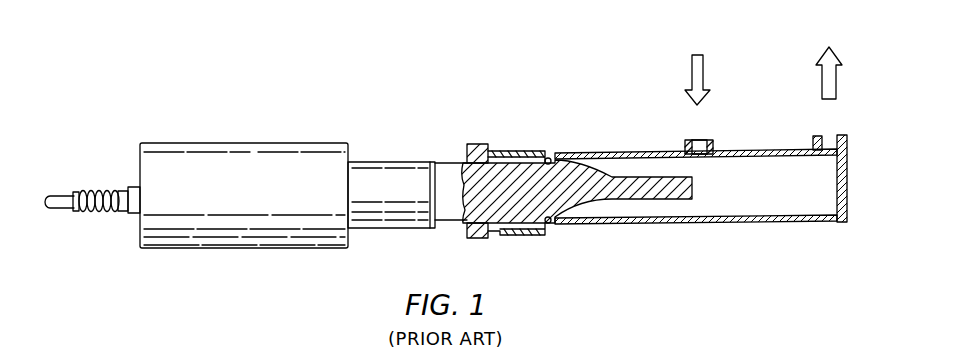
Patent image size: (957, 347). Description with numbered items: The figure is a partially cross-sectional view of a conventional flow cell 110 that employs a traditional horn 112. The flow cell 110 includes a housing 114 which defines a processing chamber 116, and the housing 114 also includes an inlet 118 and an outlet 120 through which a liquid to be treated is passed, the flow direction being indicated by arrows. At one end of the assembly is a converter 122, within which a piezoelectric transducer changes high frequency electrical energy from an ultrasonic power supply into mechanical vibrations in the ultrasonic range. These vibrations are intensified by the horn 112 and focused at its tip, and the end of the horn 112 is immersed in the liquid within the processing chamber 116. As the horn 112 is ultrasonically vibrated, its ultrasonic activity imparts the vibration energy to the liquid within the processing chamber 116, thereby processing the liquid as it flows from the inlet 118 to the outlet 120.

The flow cell 110 is at (712, 233).
The horn 112 is at (558, 180).
The housing 114 is at (772, 225).
The processing chamber 116 is at (805, 183).
The inlet 118 is at (690, 140).
The outlet 120 is at (815, 135).
The converter 122 is at (272, 158).